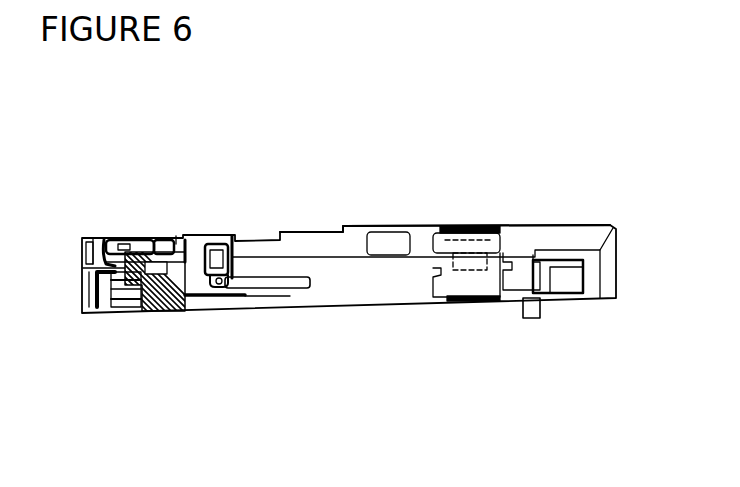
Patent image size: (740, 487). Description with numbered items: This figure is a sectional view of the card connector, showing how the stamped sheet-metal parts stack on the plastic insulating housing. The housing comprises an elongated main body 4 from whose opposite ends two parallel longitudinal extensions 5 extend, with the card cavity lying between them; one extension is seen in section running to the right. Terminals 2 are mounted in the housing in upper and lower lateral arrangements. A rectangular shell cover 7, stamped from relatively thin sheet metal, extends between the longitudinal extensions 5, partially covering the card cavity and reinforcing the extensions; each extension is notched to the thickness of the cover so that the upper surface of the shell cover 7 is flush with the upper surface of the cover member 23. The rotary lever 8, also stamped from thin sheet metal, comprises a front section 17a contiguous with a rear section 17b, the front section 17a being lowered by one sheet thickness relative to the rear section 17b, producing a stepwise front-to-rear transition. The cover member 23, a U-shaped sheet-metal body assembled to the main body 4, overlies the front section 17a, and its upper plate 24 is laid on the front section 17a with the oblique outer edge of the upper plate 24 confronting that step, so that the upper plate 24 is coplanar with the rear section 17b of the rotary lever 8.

The cover member 23 is at (101, 234).
The upper plate 24 is at (115, 237).
The front section 17a is at (173, 240).
The rotary lever 8 is at (189, 226).
The rear section 17b is at (213, 238).
The shell cover 7 is at (337, 230).
The terminals 2 is at (208, 296).
The main body 4 is at (155, 308).
The longitudinal extensions 5 is at (413, 302).